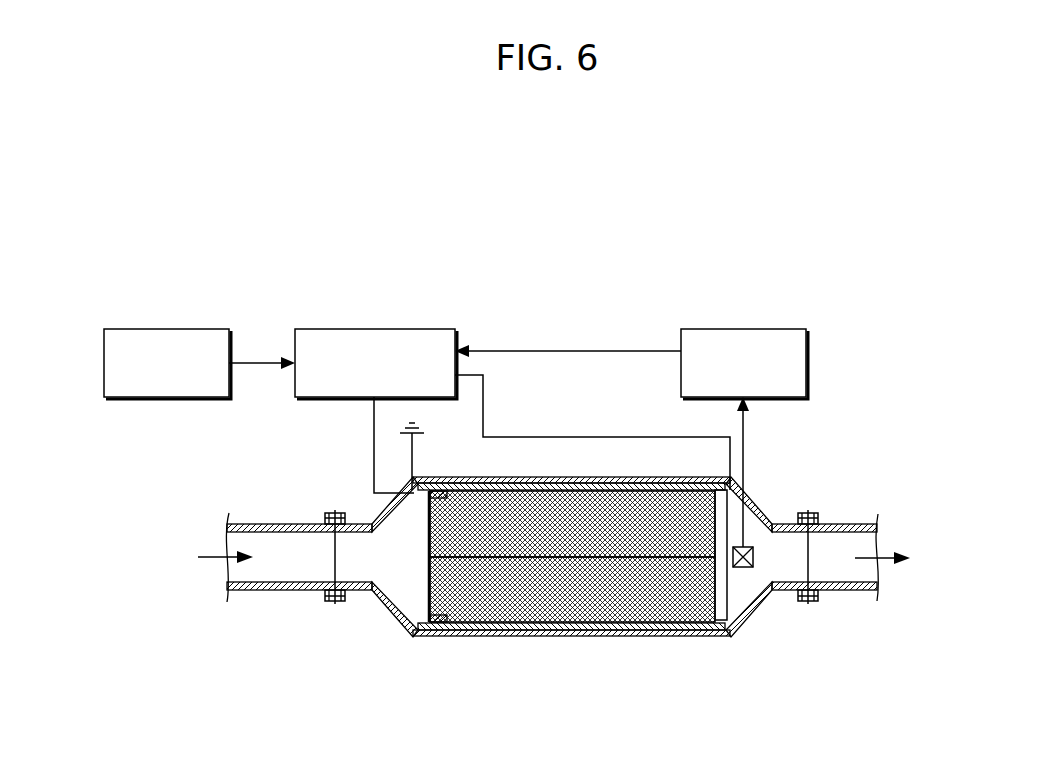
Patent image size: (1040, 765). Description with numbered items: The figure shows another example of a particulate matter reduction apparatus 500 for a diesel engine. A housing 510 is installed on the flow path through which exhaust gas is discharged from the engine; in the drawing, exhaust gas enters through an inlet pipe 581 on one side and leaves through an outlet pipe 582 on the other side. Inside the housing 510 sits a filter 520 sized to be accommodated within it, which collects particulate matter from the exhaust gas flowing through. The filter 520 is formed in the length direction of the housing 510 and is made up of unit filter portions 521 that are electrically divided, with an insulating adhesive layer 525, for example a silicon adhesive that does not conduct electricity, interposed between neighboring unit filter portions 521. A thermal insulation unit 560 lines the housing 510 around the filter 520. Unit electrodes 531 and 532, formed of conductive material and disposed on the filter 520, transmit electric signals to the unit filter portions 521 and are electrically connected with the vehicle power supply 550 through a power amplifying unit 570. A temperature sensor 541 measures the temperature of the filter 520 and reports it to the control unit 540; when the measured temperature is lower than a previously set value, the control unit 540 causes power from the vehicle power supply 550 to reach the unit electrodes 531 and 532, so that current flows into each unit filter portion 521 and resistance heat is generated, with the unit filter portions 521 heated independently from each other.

The particulate matter reduction apparatus 500 is at (232, 266).
The housing 510 is at (547, 636).
The filter 520 is at (644, 717).
The unit filter portions 521 is at (635, 535).
The insulating adhesive layer 525 is at (430, 545).
The unit electrode 531 is at (428, 636).
The unit electrode 532 is at (720, 523).
The control unit 540 is at (754, 329).
The temperature sensor 541 is at (745, 567).
The vehicle power supply 550 is at (183, 329).
The thermal insulation unit 560 is at (457, 630).
The power amplifying unit 570 is at (385, 329).
The inlet pipe 581 is at (269, 590).
The outlet pipe 582 is at (862, 590).